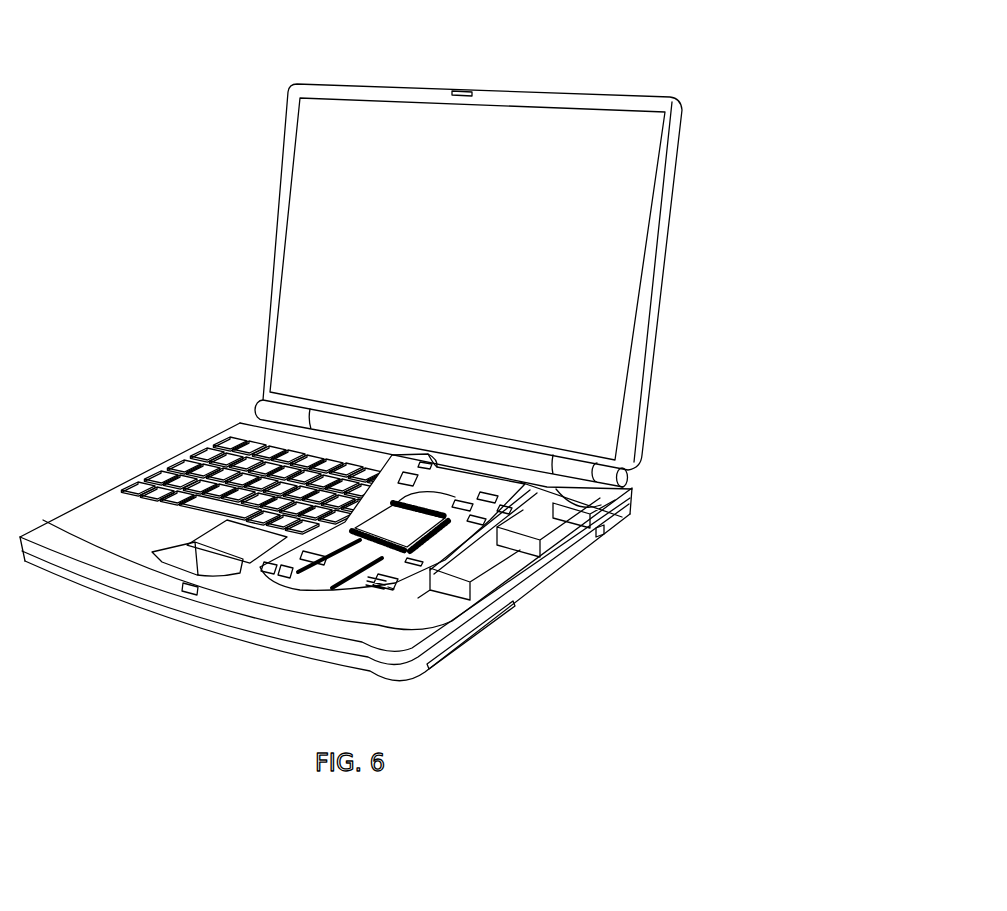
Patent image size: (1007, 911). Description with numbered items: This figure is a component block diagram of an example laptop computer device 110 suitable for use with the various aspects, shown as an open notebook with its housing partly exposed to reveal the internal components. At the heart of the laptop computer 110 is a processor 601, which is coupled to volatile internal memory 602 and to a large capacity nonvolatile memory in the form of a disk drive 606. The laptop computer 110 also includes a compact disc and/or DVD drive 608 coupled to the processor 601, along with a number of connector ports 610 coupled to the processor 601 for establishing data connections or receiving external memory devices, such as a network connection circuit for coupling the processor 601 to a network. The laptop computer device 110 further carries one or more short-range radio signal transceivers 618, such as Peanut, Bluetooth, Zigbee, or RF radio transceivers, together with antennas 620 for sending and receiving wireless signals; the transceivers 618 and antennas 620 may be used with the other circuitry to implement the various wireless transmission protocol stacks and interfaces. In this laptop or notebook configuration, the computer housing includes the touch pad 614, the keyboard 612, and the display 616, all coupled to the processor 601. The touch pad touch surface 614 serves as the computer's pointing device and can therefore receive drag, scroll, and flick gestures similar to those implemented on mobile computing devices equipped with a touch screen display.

The laptop computer device 110 is at (599, 76).
The processor 601 is at (403, 536).
The volatile internal memory 602 is at (338, 570).
The disk drive 606 is at (437, 600).
The compact disc and/or DVD drive 608 is at (495, 565).
The connector ports 610 is at (548, 515).
The keyboard 612 is at (173, 472).
The touch pad touch surface 614 is at (207, 542).
The display 616 is at (625, 420).
The short-range radio signal transceivers 618 is at (393, 587).
The antennas 620 is at (393, 565).